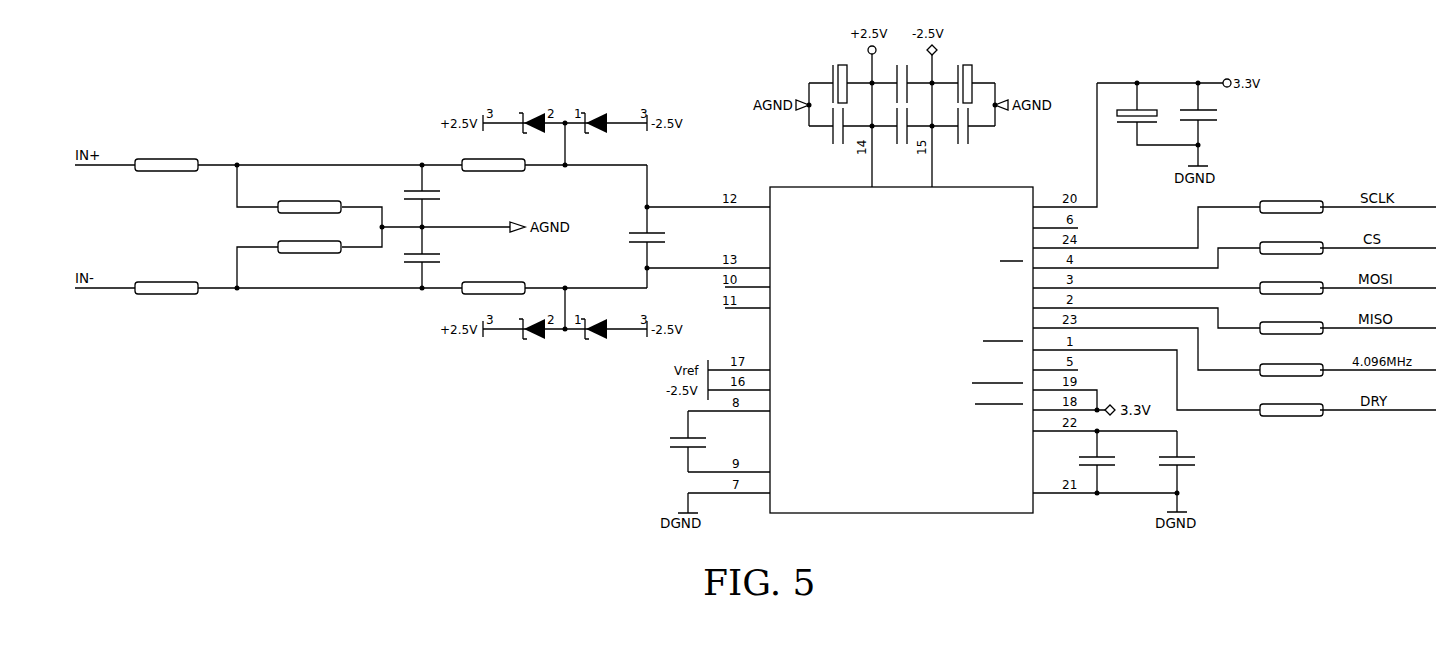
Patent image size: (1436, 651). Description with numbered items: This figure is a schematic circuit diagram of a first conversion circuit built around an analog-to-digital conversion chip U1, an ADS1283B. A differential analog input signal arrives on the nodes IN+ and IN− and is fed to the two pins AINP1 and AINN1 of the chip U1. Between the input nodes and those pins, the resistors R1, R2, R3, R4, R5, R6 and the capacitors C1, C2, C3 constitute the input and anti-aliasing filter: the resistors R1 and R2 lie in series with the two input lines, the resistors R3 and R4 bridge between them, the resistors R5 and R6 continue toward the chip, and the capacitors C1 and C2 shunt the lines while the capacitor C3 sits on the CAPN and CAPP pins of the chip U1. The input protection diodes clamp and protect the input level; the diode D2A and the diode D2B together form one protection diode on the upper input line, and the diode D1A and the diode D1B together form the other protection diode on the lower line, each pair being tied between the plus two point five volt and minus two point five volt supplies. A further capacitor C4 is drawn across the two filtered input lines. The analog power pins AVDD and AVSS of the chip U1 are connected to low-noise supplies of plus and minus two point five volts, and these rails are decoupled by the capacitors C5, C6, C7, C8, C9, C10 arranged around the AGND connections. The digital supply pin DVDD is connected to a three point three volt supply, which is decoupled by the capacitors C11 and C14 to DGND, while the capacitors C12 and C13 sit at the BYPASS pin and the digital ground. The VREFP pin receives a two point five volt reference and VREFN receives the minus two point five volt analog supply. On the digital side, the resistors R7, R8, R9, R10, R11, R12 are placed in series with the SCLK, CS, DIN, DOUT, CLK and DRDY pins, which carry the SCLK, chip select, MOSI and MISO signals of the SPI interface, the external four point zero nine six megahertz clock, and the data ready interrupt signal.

The resistor R1 is at (166, 157).
The resistor R2 is at (166, 280).
The resistor R3 is at (309, 198).
The resistor R4 is at (309, 260).
The resistor R5 is at (493, 157).
The resistor R6 is at (493, 280).
The resistor R7 is at (1290, 198).
The resistor R8 is at (1290, 239).
The resistor R9 is at (1290, 279).
The resistor R10 is at (1290, 319).
The resistor R11 is at (1290, 361).
The resistor R12 is at (1290, 401).
The capacitor C1 is at (432, 196).
The capacitor C2 is at (432, 260).
The capacitor C3 is at (667, 440).
The capacitor C4 is at (651, 240).
The capacitor C5 is at (816, 135).
The capacitor C6 is at (825, 74).
The capacitor C7 is at (891, 84).
The capacitor C8 is at (898, 135).
The capacitor C9 is at (963, 135).
The capacitor C10 is at (969, 74).
The capacitor C11 is at (1148, 108).
The capacitor C12 is at (1109, 461).
The capacitor C13 is at (1191, 461).
The capacitor C14 is at (1206, 103).
The diode D1A is at (519, 353).
The diode D1B is at (591, 353).
The diode D2A is at (519, 99).
The diode D2B is at (591, 99).
The analog-to-digital conversion chip U1 is at (901, 350).